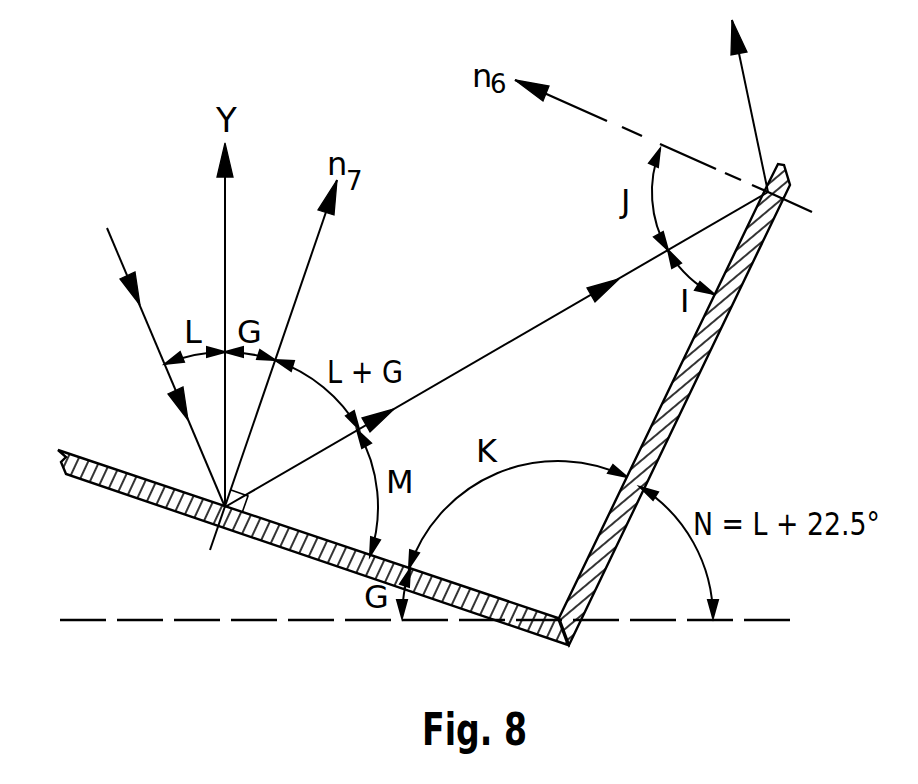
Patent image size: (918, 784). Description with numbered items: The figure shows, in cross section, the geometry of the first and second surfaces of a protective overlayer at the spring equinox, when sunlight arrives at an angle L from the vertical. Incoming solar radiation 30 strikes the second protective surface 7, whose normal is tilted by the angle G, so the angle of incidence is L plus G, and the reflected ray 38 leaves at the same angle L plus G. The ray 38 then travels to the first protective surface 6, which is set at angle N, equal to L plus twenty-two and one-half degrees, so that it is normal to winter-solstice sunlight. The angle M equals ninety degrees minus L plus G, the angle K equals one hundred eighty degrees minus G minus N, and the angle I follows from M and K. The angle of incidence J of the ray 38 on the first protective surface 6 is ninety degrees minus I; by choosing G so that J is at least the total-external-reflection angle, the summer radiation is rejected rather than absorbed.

The first protective surface 6 is at (672, 383).
The second protective surface 7 is at (163, 506).
The solar radiation 30 is at (115, 250).
The ray 38 is at (500, 342).